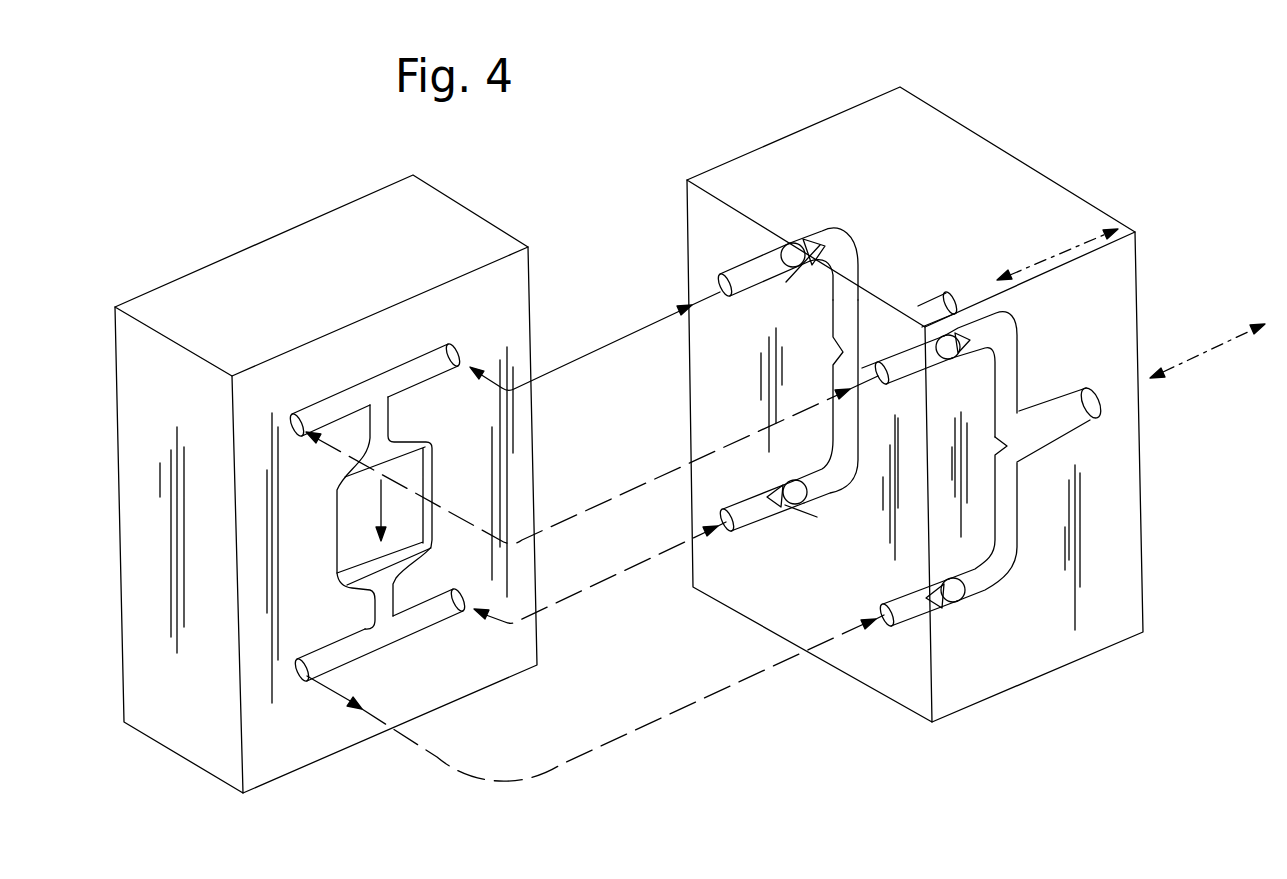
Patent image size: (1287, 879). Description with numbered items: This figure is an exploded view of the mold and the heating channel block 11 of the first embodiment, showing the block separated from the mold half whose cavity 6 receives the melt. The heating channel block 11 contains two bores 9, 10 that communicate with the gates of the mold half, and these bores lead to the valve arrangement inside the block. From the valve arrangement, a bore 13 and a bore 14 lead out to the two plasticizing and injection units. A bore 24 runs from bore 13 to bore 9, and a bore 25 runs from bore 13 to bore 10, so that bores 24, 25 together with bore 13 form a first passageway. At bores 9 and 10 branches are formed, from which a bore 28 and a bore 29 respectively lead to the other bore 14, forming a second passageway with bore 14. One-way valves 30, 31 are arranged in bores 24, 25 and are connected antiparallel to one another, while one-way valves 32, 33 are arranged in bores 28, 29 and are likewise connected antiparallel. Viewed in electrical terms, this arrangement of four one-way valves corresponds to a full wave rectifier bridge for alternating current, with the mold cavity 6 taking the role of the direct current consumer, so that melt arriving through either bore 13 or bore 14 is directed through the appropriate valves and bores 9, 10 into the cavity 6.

The cavity 6 is at (352, 540).
The bore 9 is at (724, 527).
The bore 10 is at (723, 278).
The heating channel block 11 is at (933, 720).
The bore 13 is at (1063, 414).
The bore 14 is at (951, 292).
The bore 24 is at (1010, 503).
The bore 25 is at (1017, 368).
The bore 28 is at (847, 460).
The bore 29 is at (848, 268).
The one-way valve 30 is at (942, 578).
The one-way valve 31 is at (940, 372).
The one-way valve 32 is at (793, 255).
The one-way valve 33 is at (798, 468).